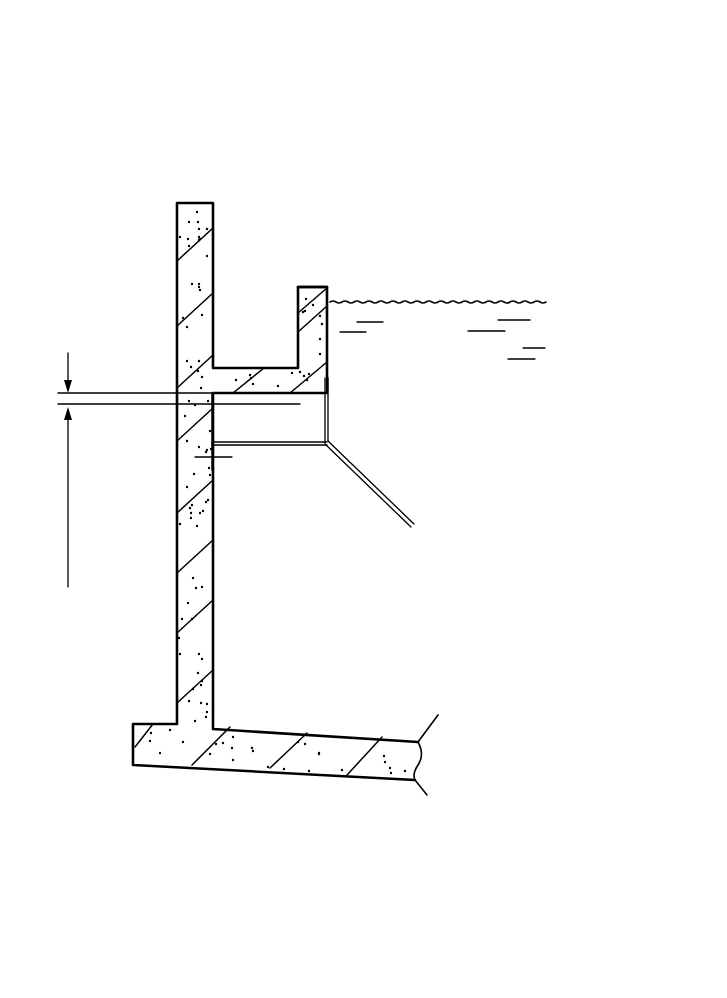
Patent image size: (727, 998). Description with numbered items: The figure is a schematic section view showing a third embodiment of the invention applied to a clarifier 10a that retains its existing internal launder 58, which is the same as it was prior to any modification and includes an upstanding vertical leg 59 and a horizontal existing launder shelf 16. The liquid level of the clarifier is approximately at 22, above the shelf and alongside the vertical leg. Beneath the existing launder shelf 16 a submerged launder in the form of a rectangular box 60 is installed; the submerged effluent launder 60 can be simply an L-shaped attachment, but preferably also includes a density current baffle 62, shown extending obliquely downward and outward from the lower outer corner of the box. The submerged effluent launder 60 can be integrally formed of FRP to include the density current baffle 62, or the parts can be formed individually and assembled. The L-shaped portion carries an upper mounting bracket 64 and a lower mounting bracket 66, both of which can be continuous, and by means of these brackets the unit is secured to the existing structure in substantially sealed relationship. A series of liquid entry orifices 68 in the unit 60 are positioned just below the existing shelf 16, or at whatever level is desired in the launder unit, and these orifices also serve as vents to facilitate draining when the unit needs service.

The clarifier 10a is at (388, 62).
The existing launder shelf 16 is at (328, 303).
The liquid level 22 is at (481, 292).
The existing internal launder 58 is at (301, 220).
The vertical leg 59 is at (327, 288).
The submerged effluent launder 60 is at (355, 412).
The density current baffle 62 is at (395, 503).
The upper mounting bracket 64 is at (345, 387).
The lower mounting bracket 66 is at (218, 465).
The liquid entry orifices 68 is at (345, 404).